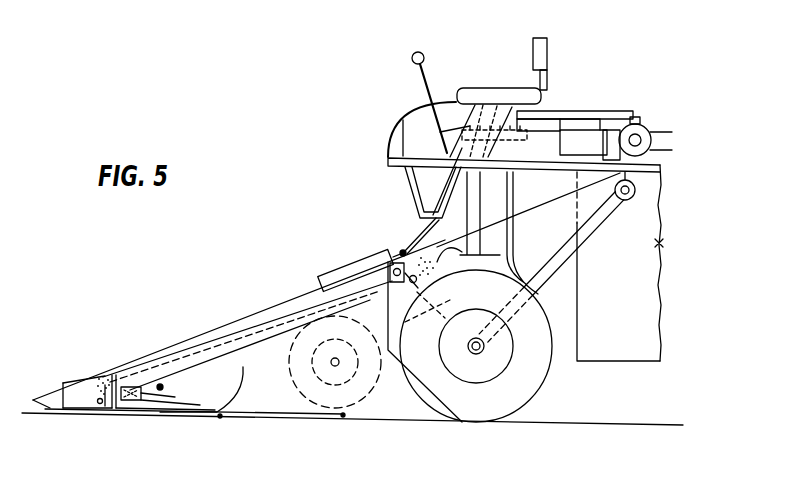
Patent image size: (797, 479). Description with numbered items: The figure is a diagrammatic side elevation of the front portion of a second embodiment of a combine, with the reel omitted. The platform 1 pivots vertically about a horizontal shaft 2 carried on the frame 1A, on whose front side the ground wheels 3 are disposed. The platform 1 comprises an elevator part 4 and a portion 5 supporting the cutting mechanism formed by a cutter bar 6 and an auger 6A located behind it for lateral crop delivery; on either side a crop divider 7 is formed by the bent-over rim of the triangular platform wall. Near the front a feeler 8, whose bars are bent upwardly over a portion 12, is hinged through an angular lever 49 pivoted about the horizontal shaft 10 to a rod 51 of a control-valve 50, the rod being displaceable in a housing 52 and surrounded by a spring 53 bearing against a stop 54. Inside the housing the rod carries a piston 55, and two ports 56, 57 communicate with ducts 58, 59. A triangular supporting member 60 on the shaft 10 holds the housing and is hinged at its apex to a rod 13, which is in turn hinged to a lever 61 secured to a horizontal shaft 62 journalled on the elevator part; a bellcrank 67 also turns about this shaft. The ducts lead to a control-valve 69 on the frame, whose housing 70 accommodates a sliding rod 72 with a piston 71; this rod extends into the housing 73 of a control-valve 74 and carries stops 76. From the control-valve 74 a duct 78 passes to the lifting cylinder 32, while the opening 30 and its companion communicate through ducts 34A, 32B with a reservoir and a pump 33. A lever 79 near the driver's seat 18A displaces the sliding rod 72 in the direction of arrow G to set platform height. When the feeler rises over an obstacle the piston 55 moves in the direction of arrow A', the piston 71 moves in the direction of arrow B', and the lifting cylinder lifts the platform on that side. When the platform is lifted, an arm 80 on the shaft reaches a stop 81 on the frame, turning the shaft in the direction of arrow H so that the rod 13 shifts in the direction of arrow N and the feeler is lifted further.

The platform 1 is at (344, 417).
The frame 1A is at (662, 243).
The horizontal shaft 2 is at (634, 197).
The ground wheels 3 is at (537, 365).
The elevator part 4 is at (540, 272).
The portion of the platform 5 is at (356, 280).
The cutter bar 6 is at (257, 418).
The auger 6A is at (292, 395).
The crop divider 7 is at (228, 328).
The feeler 8 is at (220, 418).
The horizontal shaft 10 is at (98, 403).
The bent-over portion 12 is at (246, 378).
The rod 13 is at (386, 293).
The driver's seat 18A is at (532, 43).
The opening 30 is at (534, 140).
The lifting cylinder 32 is at (443, 300).
The duct 32B is at (593, 112).
The pump 33 is at (640, 116).
The duct 34A is at (578, 99).
The angular lever 49 is at (93, 410).
The control-valve 50 is at (144, 391).
The rod 51 is at (106, 405).
The housing 52 is at (176, 415).
The spring 53 is at (160, 396).
The stop 54 is at (173, 401).
The piston 55 is at (138, 417).
The port 56 is at (115, 376).
The port 57 is at (160, 385).
The duct 58 is at (446, 198).
The duct 59 is at (481, 225).
The supporting member 60 is at (74, 382).
The lever 61 is at (470, 252).
The horizontal shaft 62 is at (400, 251).
The bellcrank 67 is at (430, 229).
The control-valve 69 is at (477, 131).
The housing 70 is at (433, 183).
The piston 71 is at (468, 130).
The sliding rod 72 is at (445, 150).
The housing 73 is at (511, 150).
The control-valve 74 is at (523, 146).
The stops 76 is at (487, 150).
The duct 78 is at (510, 240).
The lever 79 is at (429, 80).
The arm 80 is at (473, 264).
The stop 81 is at (402, 170).
The arrow G is at (411, 72).
The arrow B' is at (499, 86).
The arrow N is at (290, 338).
The arrow H is at (452, 312).
The arrow A' is at (135, 448).